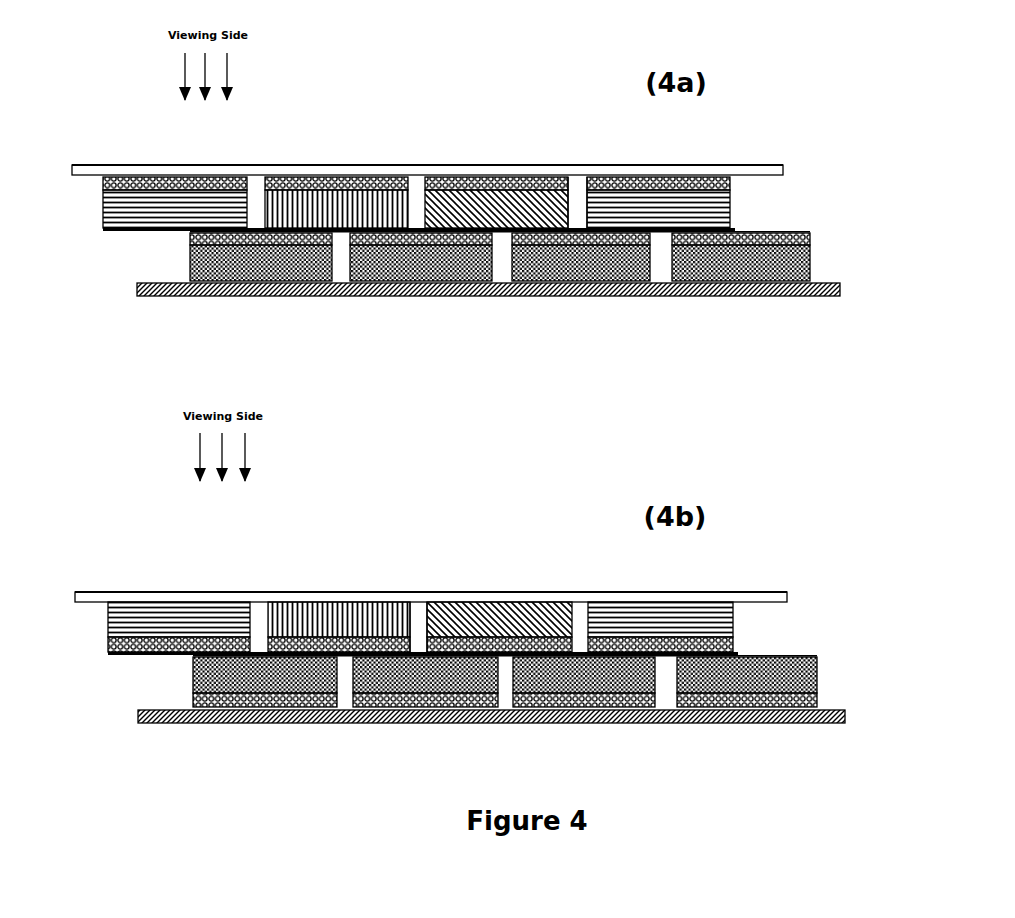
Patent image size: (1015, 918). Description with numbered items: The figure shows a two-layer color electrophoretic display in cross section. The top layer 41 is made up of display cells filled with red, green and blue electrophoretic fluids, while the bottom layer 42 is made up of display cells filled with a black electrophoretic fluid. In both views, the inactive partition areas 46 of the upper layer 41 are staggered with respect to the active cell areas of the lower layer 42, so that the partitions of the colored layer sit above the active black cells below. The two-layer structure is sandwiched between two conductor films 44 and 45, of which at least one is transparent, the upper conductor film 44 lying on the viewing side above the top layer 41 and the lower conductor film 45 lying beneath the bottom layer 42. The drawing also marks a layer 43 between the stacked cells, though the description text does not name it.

In FIG. 4a, the top layer 41 is at (782, 202).
In FIG. 4b, the top layer 41 is at (772, 625).
In FIG. 4a, the bottom layer 42 is at (828, 265).
In FIG. 4b, the bottom layer 42 is at (822, 667).
In FIG. 4a, the electrode layers 43 is at (185, 232).
In FIG. 4b, the electrode layers 43 is at (190, 657).
In FIG. 4a, the conductor film 44 is at (150, 164).
In FIG. 4b, the conductor film 44 is at (146, 591).
In FIG. 4a, the conductor film 45 is at (145, 298).
In FIG. 4b, the conductor film 45 is at (148, 725).
In FIG. 4a, the inactive partition areas 46 is at (575, 205).
In FIG. 4b, the inactive partition areas 46 is at (420, 615).